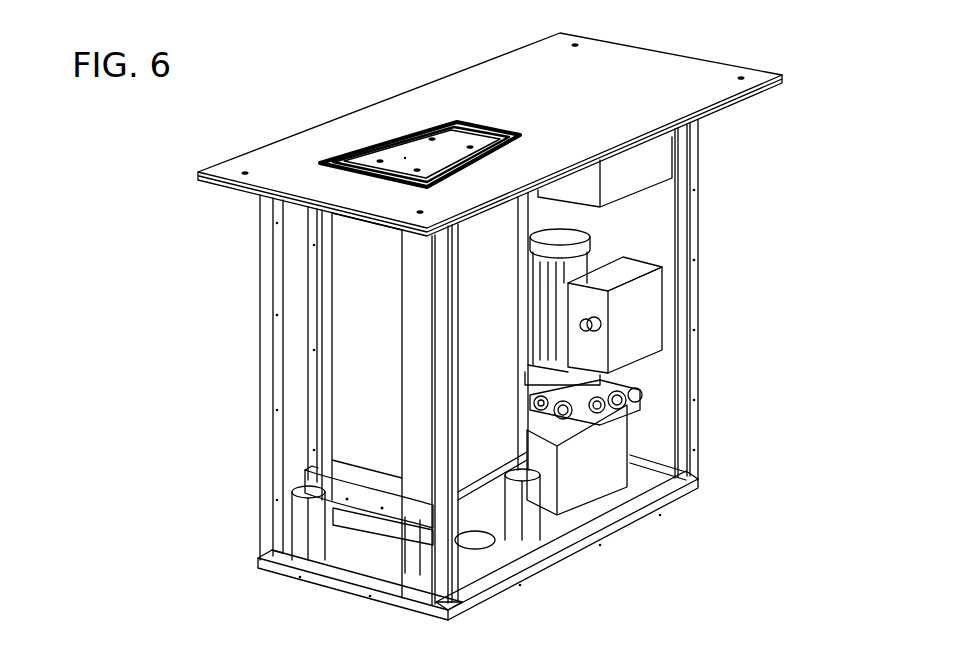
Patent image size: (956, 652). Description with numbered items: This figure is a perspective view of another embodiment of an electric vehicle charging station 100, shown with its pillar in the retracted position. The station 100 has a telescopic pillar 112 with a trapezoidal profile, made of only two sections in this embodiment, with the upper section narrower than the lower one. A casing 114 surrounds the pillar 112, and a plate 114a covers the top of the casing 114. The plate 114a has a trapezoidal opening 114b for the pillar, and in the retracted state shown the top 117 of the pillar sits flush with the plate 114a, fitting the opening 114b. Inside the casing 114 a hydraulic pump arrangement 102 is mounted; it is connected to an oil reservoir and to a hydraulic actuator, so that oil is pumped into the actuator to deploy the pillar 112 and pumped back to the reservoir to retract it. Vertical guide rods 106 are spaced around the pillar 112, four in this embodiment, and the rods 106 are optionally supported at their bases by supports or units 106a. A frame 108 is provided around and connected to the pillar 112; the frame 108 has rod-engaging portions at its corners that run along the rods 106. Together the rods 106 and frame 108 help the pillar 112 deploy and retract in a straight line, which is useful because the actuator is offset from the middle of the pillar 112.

The electric vehicle charging station 100 is at (92, 302).
The hydraulic pump arrangement 102 is at (622, 440).
The vertical guide rods 106 is at (313, 359).
The supports or units 106a is at (305, 525).
The frame 108 is at (368, 503).
The telescopic pillar 112 is at (347, 340).
The casing 114 is at (702, 207).
The plate 114a is at (673, 88).
The trapezoidal opening 114b is at (428, 127).
The top of the pillar 117 is at (398, 155).